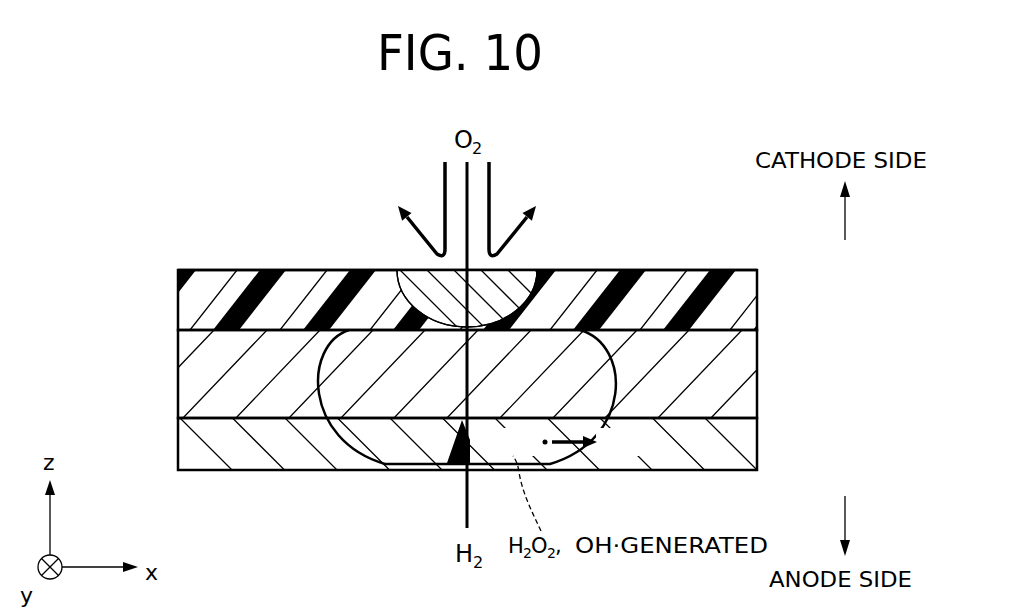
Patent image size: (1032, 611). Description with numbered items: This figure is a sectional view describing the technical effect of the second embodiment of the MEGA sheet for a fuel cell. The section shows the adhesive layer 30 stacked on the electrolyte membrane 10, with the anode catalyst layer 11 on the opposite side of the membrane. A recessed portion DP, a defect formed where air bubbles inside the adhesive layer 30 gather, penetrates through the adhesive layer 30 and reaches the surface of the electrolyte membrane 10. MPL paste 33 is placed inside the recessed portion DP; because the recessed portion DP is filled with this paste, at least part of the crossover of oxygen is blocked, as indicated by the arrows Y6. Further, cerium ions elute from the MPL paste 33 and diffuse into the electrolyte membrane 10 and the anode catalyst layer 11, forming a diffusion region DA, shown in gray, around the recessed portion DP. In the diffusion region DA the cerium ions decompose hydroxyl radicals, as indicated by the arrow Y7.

The adhesive layer 30 is at (200, 297).
The electrolyte membrane 10 is at (198, 372).
The anode catalyst layer 11 is at (197, 440).
The MPL paste 33 is at (523, 284).
The recessed portion DP is at (412, 284).
The diffusion region DA is at (352, 450).
The arrows indicating blocked oxygen crossover Y6 is at (441, 171).
The arrow indicating hydroxyl radical decomposition Y7 is at (565, 457).